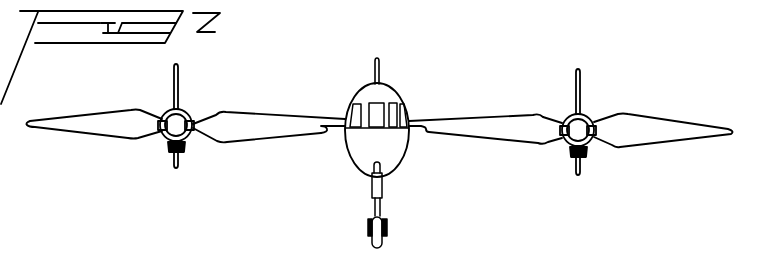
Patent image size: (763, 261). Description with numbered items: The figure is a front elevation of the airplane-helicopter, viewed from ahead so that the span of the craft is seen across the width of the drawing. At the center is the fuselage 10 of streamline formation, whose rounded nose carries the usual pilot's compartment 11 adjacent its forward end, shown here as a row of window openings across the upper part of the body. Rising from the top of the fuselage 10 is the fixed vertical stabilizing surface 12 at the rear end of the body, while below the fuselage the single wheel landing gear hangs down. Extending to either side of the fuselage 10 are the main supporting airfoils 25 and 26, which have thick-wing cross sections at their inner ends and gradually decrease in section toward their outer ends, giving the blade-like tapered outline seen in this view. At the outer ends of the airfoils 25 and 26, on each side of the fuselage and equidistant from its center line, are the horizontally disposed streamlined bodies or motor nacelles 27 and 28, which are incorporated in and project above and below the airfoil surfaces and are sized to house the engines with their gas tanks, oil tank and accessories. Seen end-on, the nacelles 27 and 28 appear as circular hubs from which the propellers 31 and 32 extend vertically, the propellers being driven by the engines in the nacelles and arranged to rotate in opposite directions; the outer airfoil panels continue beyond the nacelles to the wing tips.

The fuselage 10 is at (396, 152).
The pilot's compartment 11 is at (393, 111).
The fixed vertical stabilizing surface 12 is at (381, 67).
The main supporting airfoil 25 is at (316, 121).
The main supporting airfoil 26 is at (443, 118).
The motor nacelle 27 is at (166, 112).
The motor nacelle 28 is at (588, 113).
The propeller 31 is at (218, 121).
The propeller 32 is at (643, 123).